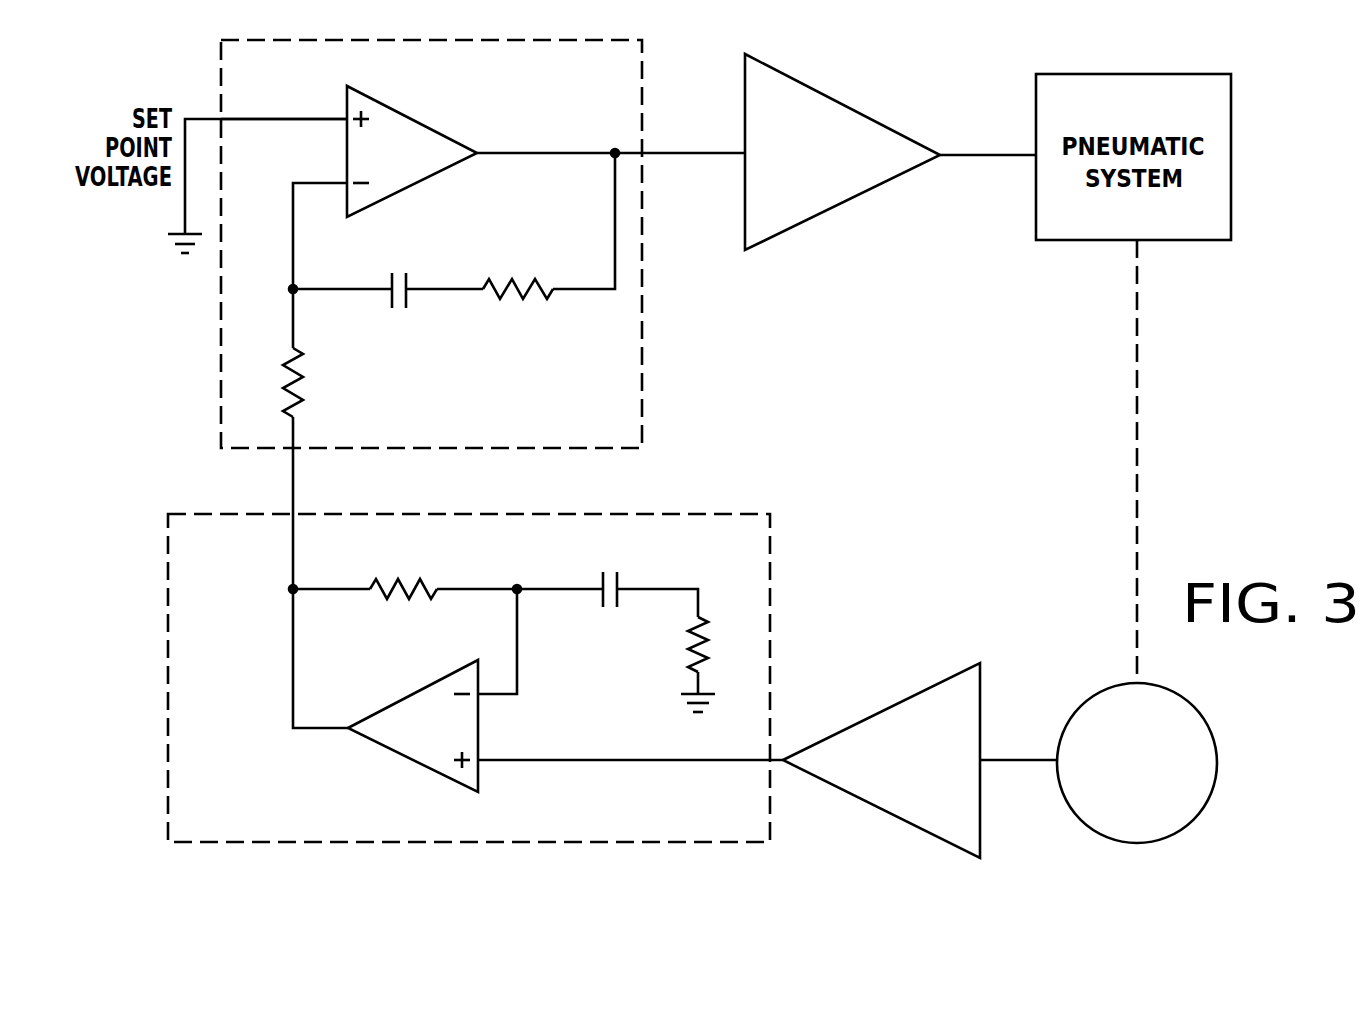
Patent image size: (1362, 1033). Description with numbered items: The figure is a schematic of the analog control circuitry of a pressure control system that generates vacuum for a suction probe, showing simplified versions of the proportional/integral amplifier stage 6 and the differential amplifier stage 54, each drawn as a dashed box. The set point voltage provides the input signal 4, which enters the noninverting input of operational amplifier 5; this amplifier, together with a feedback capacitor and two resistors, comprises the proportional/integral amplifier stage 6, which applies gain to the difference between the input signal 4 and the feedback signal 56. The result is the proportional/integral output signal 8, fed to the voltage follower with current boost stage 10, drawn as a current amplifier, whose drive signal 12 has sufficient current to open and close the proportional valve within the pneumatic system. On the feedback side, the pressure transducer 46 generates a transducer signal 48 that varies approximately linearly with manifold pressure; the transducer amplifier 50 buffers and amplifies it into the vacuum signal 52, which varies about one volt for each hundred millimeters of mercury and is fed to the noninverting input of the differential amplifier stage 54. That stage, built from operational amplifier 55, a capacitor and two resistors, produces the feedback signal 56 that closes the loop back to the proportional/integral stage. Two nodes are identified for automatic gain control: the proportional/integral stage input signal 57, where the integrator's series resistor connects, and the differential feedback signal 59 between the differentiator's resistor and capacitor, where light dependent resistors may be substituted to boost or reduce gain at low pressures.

The input signal 4 is at (272, 119).
The operational amplifier 5 is at (415, 121).
The proportional/integral amplifier stage 6 is at (642, 90).
The proportional/integral output signal 8 is at (688, 156).
The voltage follower with current boost stage 10 is at (842, 102).
The drive signal 12 is at (985, 152).
The pressure transducer 46 is at (1197, 820).
The transducer signal 48 is at (1016, 763).
The transducer amplifier 50 is at (900, 700).
The vacuum signal 52 is at (612, 763).
The differential amplifier stage 54 is at (388, 844).
The operational amplifier 55 is at (392, 748).
The feedback signal 56 is at (293, 541).
The proportional/integral stage input signal 57 is at (293, 325).
The differential feedback signal 59 is at (517, 589).